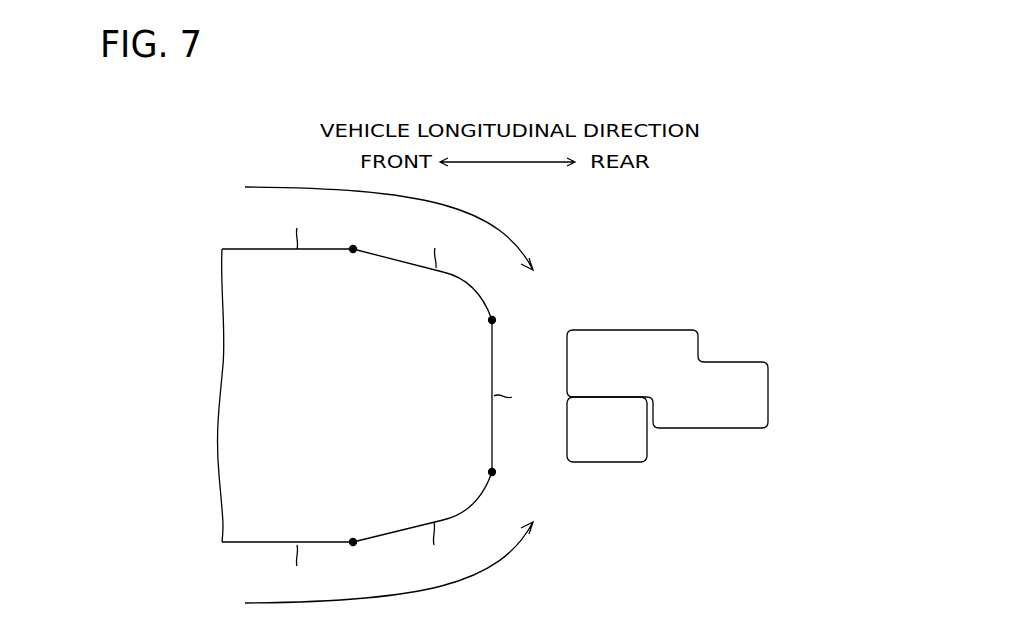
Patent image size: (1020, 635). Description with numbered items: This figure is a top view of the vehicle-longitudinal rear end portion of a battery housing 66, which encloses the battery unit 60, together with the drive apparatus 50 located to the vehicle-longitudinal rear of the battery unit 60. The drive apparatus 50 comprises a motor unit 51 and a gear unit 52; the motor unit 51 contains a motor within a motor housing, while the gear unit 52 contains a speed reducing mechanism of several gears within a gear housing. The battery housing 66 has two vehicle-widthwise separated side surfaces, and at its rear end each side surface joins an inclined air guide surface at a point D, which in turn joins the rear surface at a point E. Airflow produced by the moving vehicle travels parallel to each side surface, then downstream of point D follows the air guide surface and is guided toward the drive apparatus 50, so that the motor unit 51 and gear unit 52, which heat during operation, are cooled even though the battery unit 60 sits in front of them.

The battery housing 66 is at (252, 378).
The battery unit 60 is at (351, 396).
The drive apparatus 50 is at (667, 439).
The motor unit 51 is at (607, 455).
The gear unit 52 is at (693, 410).